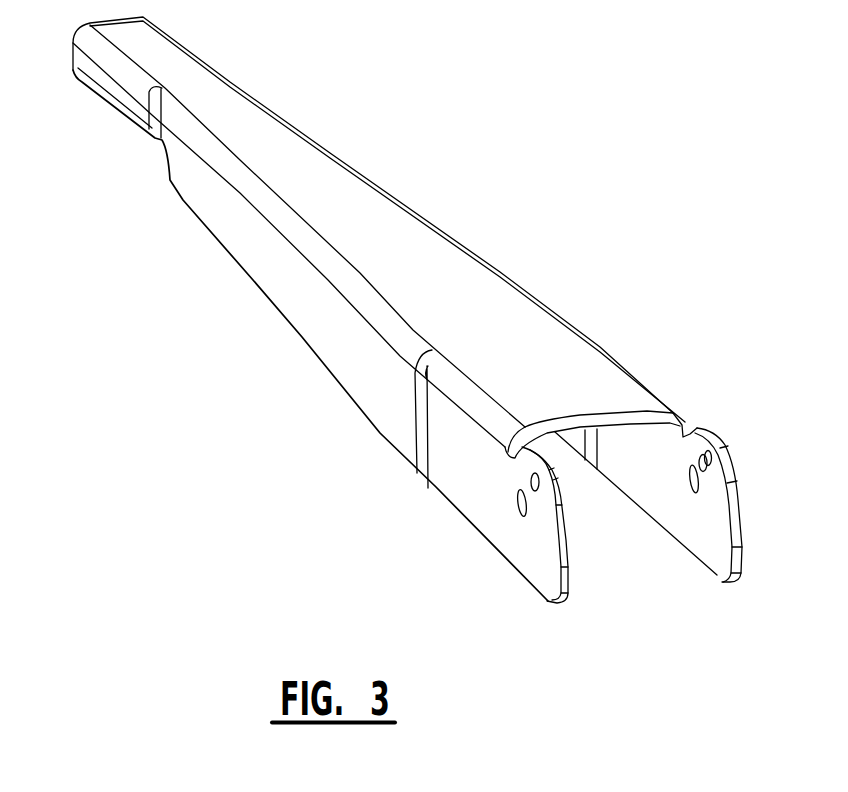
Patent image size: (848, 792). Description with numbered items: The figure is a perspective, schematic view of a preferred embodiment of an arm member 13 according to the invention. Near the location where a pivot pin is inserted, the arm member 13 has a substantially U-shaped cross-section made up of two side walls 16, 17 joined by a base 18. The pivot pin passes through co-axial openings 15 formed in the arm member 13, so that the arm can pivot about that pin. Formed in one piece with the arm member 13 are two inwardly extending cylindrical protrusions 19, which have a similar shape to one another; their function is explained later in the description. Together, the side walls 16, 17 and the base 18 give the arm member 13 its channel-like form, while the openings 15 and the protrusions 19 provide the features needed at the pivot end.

The arm member 13 is at (441, 143).
The co-axial openings 15 is at (525, 515).
The side wall 16 is at (328, 350).
The side wall 17 is at (716, 565).
The base 18 is at (477, 280).
The inwardly extending cylindrical protrusions 19 is at (560, 480).